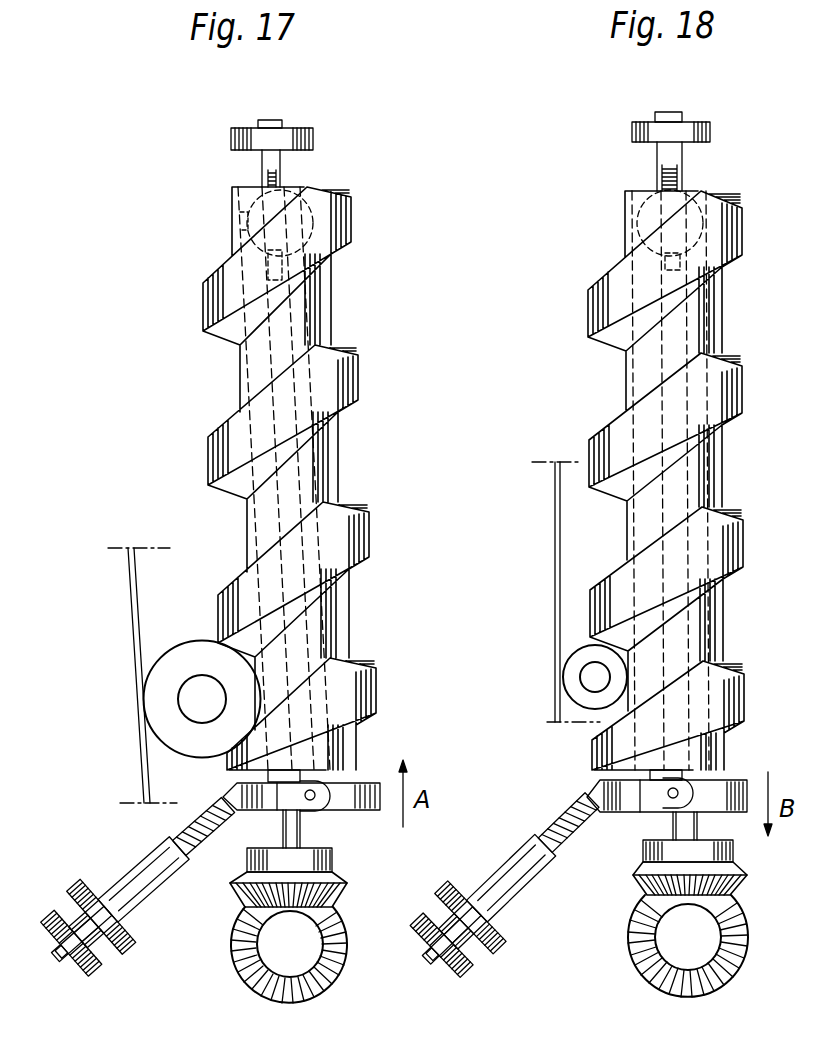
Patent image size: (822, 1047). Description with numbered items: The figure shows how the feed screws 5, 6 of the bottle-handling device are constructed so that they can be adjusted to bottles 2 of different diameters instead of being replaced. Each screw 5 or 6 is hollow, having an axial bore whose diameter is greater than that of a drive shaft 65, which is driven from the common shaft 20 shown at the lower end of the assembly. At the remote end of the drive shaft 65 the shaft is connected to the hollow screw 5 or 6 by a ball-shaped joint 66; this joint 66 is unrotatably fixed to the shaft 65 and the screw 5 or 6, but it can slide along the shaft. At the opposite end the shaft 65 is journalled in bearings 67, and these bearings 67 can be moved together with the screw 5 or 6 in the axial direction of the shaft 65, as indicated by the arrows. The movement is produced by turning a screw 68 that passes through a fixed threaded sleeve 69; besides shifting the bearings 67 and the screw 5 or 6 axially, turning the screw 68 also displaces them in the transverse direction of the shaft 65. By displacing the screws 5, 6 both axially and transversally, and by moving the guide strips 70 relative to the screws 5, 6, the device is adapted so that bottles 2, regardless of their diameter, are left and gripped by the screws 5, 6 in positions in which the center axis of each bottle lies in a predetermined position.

In FIG. 17, the bottle 2 is at (198, 652).
In FIG. 18, the bottle 2 is at (572, 681).
In FIG. 17, the feed screw 5 is at (322, 478).
In FIG. 18, the feed screw 5 is at (699, 480).
In FIG. 17, the feed screw 6 is at (363, 392).
In FIG. 18, the feed screw 6 is at (745, 393).
In FIG. 17, the common shaft 20 is at (312, 953).
In FIG. 18, the common shaft 20 is at (700, 958).
In FIG. 17, the drive shaft 65 is at (289, 497).
In FIG. 18, the drive shaft 65 is at (684, 487).
In FIG. 17, the ball-shaped joint 66 is at (291, 186).
In FIG. 18, the ball-shaped joint 66 is at (690, 190).
In FIG. 17, the bearings 67 is at (343, 799).
In FIG. 18, the bearings 67 is at (730, 783).
In FIG. 17, the screw 68 is at (56, 913).
In FIG. 18, the screw 68 is at (468, 960).
In FIG. 17, the fixed threaded sleeve 69 is at (147, 870).
In FIG. 18, the fixed threaded sleeve 69 is at (533, 858).
In FIG. 17, the guide strip 70 is at (133, 648).
In FIG. 18, the guide strip 70 is at (555, 566).